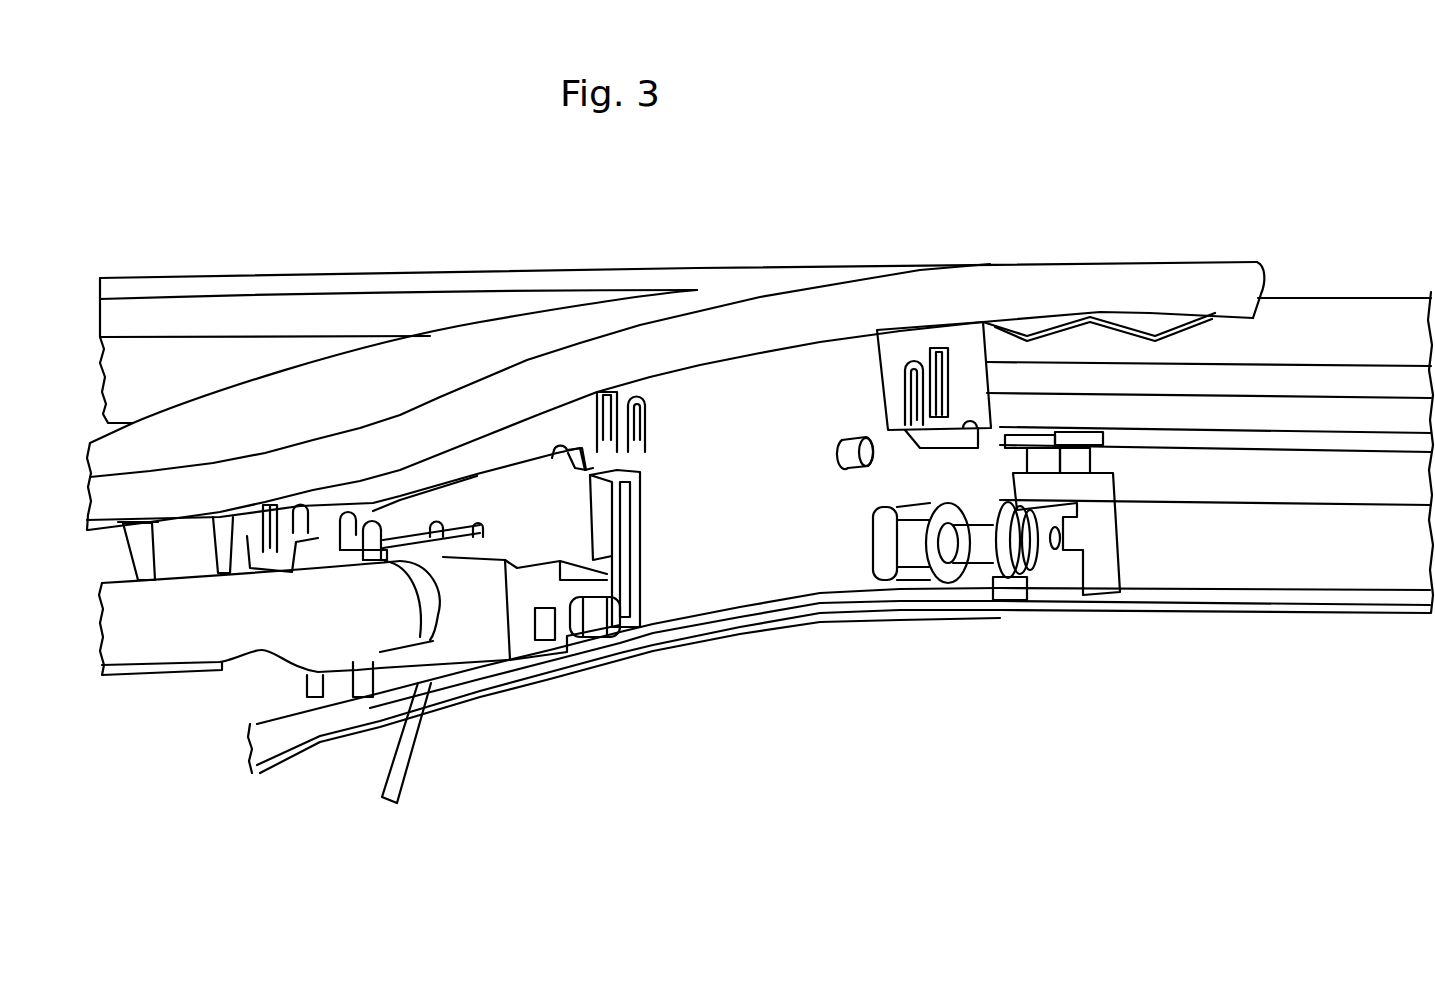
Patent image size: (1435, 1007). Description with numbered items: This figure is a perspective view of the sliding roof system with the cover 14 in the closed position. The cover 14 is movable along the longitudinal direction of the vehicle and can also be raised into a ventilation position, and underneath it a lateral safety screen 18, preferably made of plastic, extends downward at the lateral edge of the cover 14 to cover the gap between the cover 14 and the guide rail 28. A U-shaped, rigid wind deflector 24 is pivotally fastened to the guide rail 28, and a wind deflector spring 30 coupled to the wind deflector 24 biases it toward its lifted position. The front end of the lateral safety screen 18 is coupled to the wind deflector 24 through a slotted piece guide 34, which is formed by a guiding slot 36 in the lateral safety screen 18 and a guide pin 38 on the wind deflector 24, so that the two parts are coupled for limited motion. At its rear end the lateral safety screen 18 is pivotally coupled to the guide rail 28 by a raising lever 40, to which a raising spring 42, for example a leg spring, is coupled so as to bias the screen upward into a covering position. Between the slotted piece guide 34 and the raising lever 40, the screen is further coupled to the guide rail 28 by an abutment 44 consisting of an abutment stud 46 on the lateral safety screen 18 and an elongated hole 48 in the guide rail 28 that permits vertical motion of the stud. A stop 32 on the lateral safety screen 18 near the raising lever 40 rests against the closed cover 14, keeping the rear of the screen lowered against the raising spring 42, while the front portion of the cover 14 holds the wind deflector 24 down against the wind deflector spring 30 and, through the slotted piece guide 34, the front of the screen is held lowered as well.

The cover 14 is at (647, 277).
The lateral safety screen 18 is at (797, 553).
The wind deflector 24 is at (140, 650).
The guide rail 28 is at (1251, 570).
The wind deflector spring 30 is at (402, 778).
The stop 32 is at (877, 330).
The slotted piece guide 34 is at (333, 357).
The guiding slot 36 is at (350, 540).
The guide pin 38 is at (365, 537).
The raising lever 40 is at (900, 570).
The raising spring 42 is at (1017, 567).
The abutment 44 is at (629, 624).
The abutment stud 46 is at (627, 563).
The elongated hole 48 is at (633, 558).